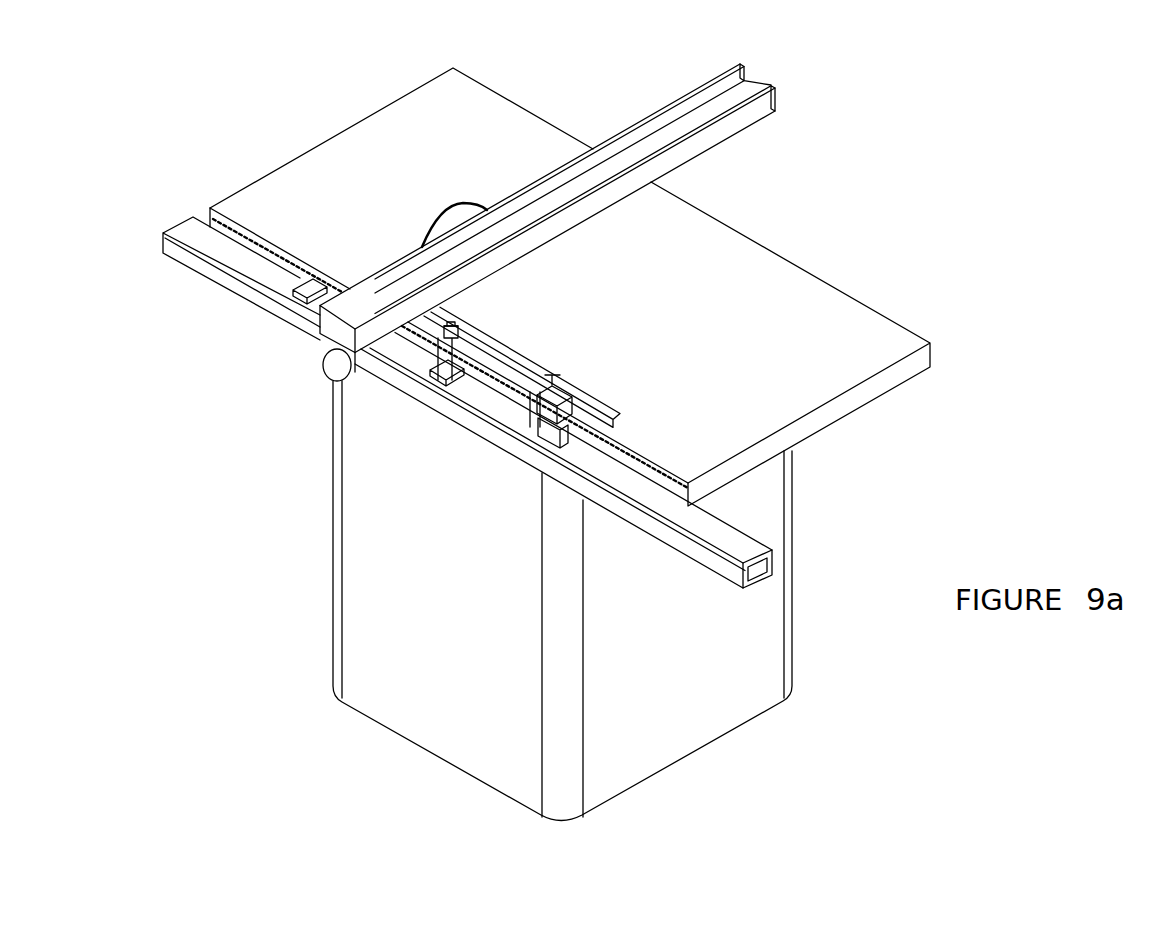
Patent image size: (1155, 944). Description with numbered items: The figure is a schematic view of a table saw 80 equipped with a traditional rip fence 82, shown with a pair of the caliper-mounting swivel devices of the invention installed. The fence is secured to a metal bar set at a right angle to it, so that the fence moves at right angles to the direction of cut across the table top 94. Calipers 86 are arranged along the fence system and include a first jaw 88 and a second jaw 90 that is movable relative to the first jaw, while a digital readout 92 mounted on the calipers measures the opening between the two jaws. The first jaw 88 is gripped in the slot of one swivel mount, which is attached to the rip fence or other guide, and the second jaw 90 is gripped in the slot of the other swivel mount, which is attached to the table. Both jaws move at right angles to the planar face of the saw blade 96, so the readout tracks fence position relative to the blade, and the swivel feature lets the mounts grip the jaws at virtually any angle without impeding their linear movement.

The table saw 80 is at (385, 473).
The rip fence 82 is at (732, 122).
The calipers 86 is at (495, 355).
The first jaw 88 is at (447, 360).
The second jaw 90 is at (530, 392).
The digital readout 92 is at (457, 330).
The table top 94 is at (792, 318).
The saw blade 96 is at (443, 213).